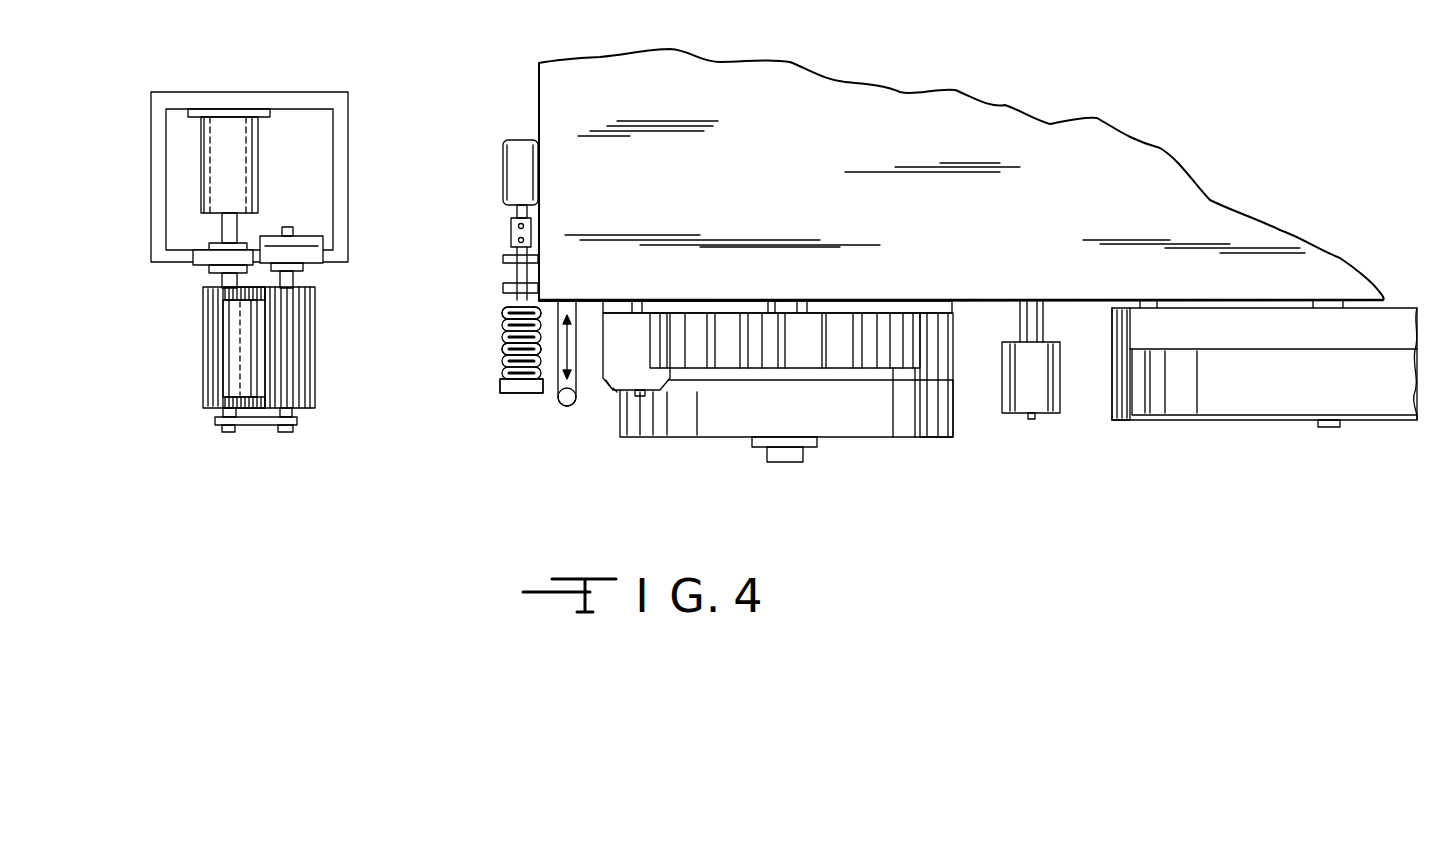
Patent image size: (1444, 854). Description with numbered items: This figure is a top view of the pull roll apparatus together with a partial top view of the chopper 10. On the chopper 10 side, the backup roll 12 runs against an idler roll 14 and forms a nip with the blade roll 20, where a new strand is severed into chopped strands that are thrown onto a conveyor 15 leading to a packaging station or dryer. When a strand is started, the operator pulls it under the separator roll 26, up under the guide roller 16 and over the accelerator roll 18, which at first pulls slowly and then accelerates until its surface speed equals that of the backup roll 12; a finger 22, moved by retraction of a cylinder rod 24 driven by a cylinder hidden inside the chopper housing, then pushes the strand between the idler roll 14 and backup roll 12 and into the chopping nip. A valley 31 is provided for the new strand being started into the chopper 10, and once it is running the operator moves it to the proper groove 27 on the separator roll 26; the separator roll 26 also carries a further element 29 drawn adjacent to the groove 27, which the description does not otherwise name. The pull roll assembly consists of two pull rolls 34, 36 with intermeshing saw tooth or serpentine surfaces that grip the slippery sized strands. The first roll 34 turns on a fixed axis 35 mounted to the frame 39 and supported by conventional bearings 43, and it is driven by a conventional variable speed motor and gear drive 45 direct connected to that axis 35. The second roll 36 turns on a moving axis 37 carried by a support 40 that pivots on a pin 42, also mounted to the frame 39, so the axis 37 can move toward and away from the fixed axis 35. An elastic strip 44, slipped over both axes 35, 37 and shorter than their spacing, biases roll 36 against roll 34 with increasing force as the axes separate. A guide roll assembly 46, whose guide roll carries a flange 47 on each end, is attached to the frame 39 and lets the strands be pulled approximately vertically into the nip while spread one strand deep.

The chopper 10 is at (539, 102).
The backup roll 12 is at (860, 420).
The idler roll 14 is at (627, 330).
The conveyor 15 is at (1112, 322).
The guide roller 16 is at (1008, 343).
The accelerator roll 18 is at (1148, 405).
The blade roll 20 is at (697, 323).
The finger 22 is at (557, 368).
The cylinder rod 24 is at (573, 408).
The separator roll 26 is at (503, 394).
The groove 27 is at (502, 320).
The bellows segment 29 is at (502, 362).
The valley 31 is at (503, 383).
The pull roll 34 is at (202, 373).
The fixed axis 35 is at (227, 433).
The pull roll 36 is at (313, 339).
The moving axis 37 is at (287, 433).
The frame 39 is at (350, 140).
The support 40 is at (323, 260).
The pivot pin 42 is at (285, 224).
The bearings 43 is at (205, 248).
The elastic strip 44 is at (253, 430).
The variable speed motor and gear drive 45 is at (257, 148).
The guide roll assembly 46 is at (235, 358).
The flange 47 is at (223, 299).